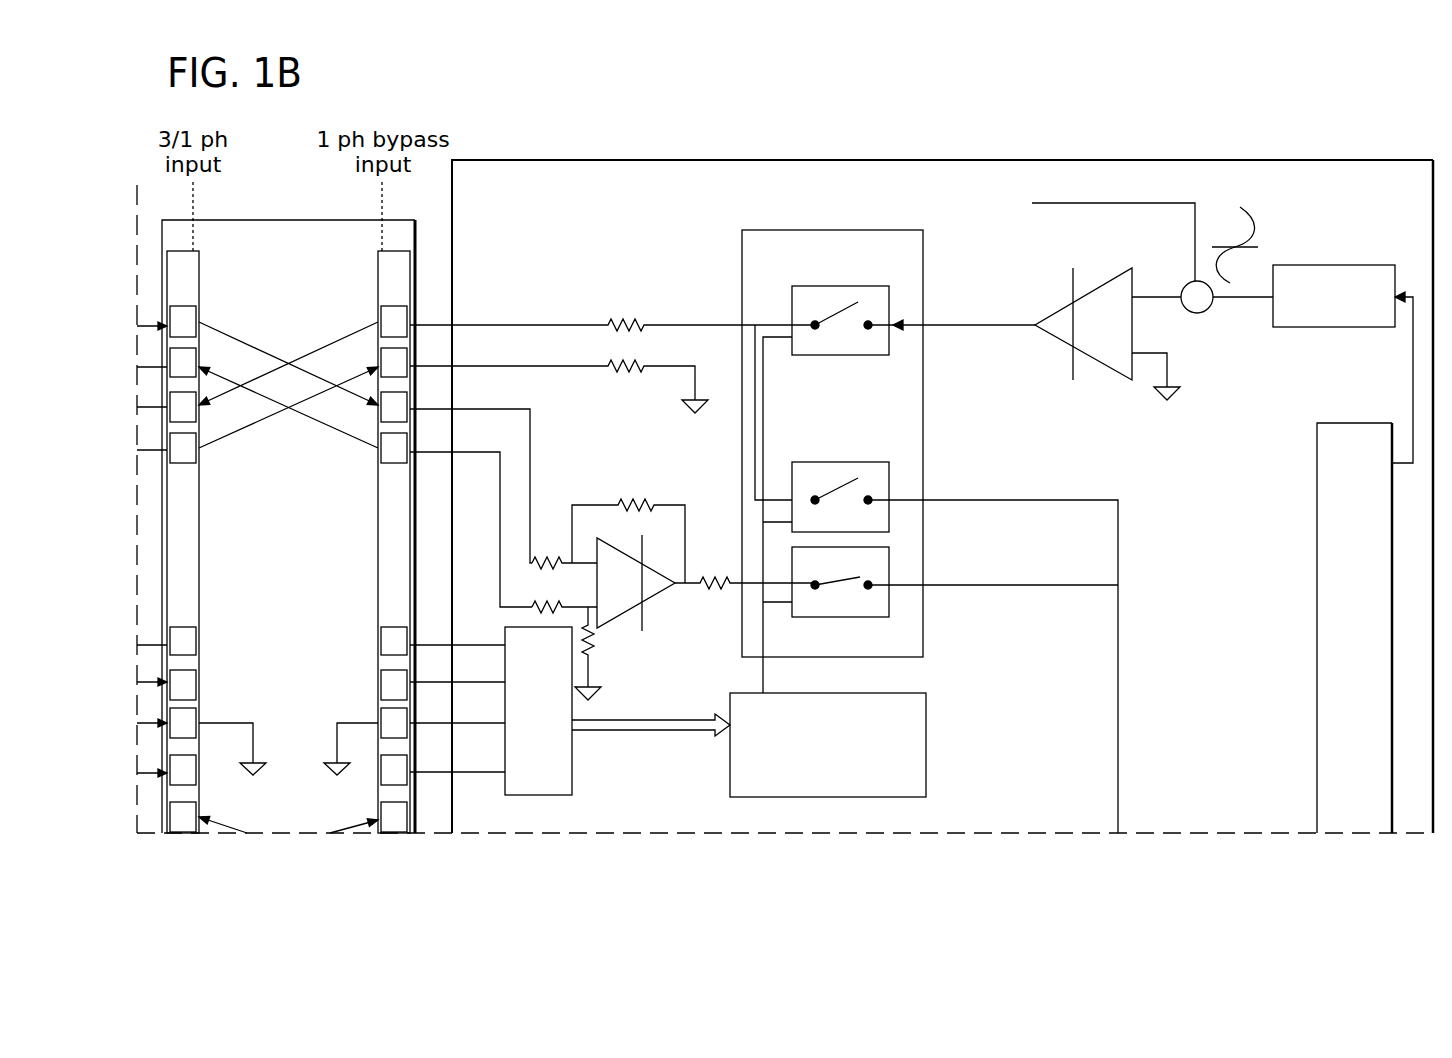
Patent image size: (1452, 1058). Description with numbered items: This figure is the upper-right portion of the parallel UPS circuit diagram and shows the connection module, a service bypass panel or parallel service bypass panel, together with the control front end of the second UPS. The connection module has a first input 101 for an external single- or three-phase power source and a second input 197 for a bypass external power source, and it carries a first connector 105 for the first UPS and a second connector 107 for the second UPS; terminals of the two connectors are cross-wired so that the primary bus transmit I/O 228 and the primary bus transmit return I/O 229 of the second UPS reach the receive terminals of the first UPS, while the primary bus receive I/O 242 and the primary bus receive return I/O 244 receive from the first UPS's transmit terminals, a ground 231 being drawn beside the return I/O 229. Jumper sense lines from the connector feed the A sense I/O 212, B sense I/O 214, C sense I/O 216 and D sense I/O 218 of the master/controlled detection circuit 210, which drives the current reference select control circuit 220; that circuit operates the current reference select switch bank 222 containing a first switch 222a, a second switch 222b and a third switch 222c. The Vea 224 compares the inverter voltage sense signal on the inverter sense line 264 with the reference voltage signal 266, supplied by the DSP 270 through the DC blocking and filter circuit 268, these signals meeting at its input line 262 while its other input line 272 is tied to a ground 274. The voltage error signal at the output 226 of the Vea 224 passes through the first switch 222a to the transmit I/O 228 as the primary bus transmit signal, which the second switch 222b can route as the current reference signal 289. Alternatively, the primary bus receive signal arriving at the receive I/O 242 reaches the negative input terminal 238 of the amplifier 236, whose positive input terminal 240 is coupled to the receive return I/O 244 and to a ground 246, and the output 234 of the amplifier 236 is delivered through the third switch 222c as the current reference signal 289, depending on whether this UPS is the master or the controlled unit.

The first input 101 is at (195, 206).
The second input 197 is at (380, 206).
The first connector 105 is at (185, 293).
The second connector 107 is at (385, 293).
The A sense I/O 212 is at (422, 643).
The B sense I/O 214 is at (423, 680).
The C sense I/O 216 is at (423, 720).
The D sense I/O 218 is at (420, 775).
The master/controlled detection circuit 210 is at (520, 771).
The primary bus transmit I/O 228 is at (590, 322).
The primary bus transmit return I/O 229 is at (655, 364).
The ground 231 is at (688, 412).
The primary bus receive I/O 242 is at (532, 430).
The primary bus receive return I/O 244 is at (483, 450).
The negative input terminal of the amplifier 238 is at (575, 560).
The positive input terminal of the amplifier 240 is at (590, 605).
The amplifier 236 is at (611, 592).
The output of the amplifier 234 is at (733, 587).
The ground 246 is at (600, 694).
The current reference select switch bank 222 is at (830, 228).
The switch SW1 222a is at (840, 284).
The switch SW2 222b is at (840, 460).
The switch SW3 222c is at (840, 619).
The output of the Vea 226 is at (960, 327).
The current reference select control circuit 220 is at (928, 742).
The current reference signal 289 is at (1120, 712).
The Voltage error amplifier (Vea) 224 is at (1056, 340).
The inverting input line 262 is at (1134, 296).
The inverter sense line 264 is at (1104, 205).
The reference voltage signal 266 is at (1237, 300).
The non-inverting input line 272 is at (1134, 352).
The ground 274 is at (1182, 394).
The DC blocking and filter circuit 268 is at (1337, 264).
The Digital Signal Processor (DSP) 270 is at (1338, 570).